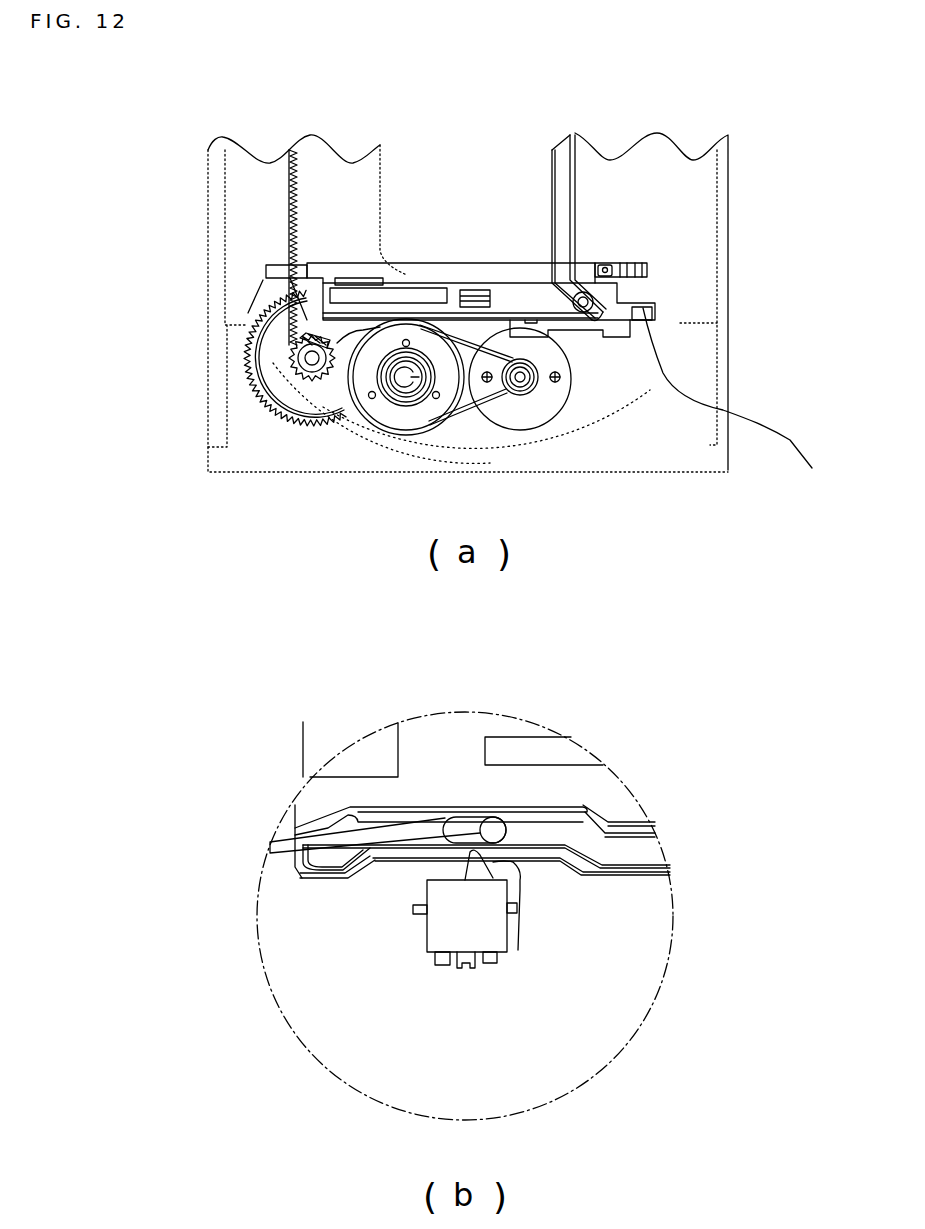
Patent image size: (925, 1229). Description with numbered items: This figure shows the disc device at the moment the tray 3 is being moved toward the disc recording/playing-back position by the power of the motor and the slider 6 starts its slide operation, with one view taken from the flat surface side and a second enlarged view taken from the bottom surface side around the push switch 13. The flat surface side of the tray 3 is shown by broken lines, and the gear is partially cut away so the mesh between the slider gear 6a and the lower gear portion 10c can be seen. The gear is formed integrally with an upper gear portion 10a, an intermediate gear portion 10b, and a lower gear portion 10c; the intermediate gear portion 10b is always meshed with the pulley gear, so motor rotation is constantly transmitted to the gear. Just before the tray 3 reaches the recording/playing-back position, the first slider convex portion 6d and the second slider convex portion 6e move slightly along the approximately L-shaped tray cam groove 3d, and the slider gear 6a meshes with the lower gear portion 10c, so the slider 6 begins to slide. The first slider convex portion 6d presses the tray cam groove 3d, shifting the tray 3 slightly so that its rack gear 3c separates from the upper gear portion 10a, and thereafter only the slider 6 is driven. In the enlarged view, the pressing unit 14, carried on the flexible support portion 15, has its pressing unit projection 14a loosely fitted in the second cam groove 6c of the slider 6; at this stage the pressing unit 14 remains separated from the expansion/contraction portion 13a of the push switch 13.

The tray 3 is at (730, 290).
The rack gear 3c is at (287, 182).
The tray cam groove 3d is at (747, 408).
The slider 6 is at (512, 263).
The slider gear 6a is at (287, 277).
The second cam groove 6c is at (565, 822).
The first slider convex portion 6d is at (600, 268).
The second slider convex portion 6e is at (609, 265).
The upper gear portion 10a is at (305, 380).
The intermediate gear portion 10b is at (242, 360).
The lower gear portion 10c is at (317, 345).
The push switch 13 is at (427, 952).
The expansion/contraction portion 13a is at (490, 865).
The pressing unit 14 is at (467, 812).
The pressing unit projection 14a is at (303, 870).
The support portion 15 is at (380, 820).